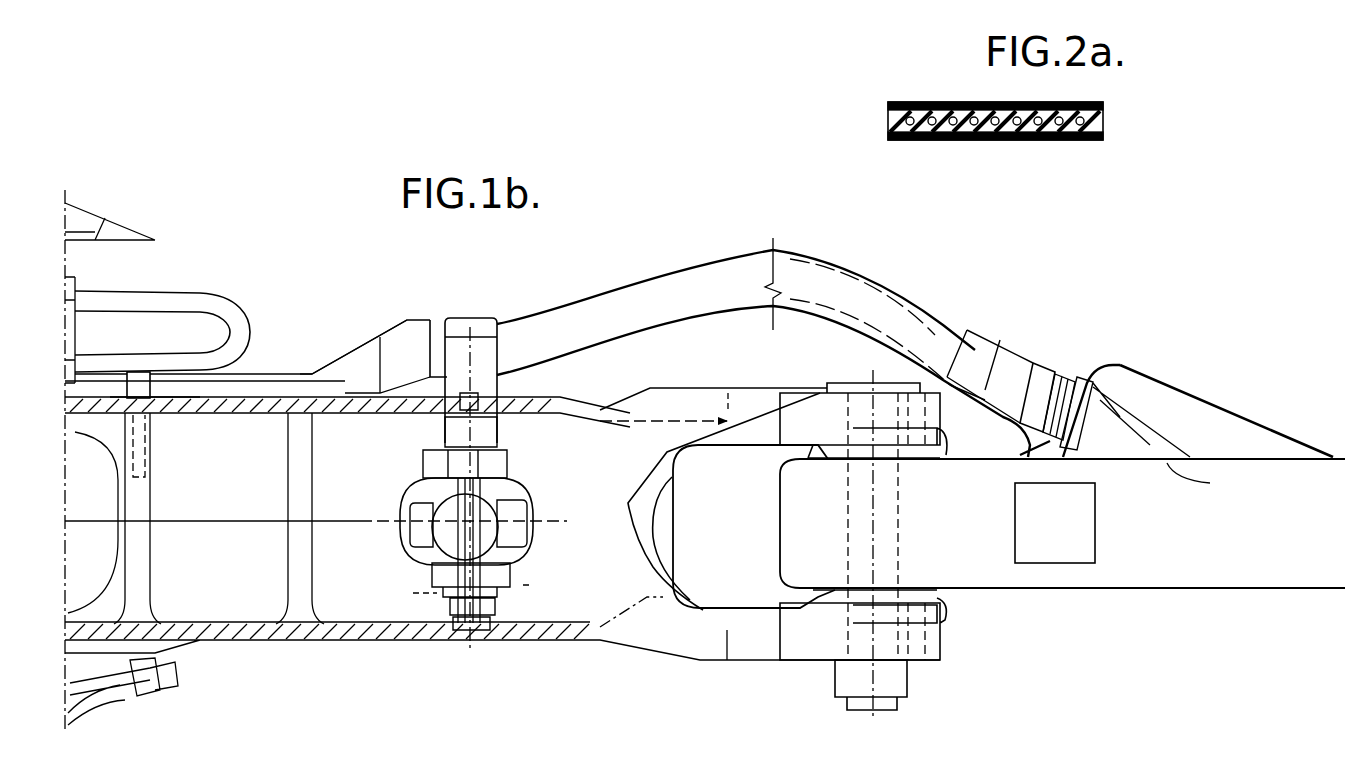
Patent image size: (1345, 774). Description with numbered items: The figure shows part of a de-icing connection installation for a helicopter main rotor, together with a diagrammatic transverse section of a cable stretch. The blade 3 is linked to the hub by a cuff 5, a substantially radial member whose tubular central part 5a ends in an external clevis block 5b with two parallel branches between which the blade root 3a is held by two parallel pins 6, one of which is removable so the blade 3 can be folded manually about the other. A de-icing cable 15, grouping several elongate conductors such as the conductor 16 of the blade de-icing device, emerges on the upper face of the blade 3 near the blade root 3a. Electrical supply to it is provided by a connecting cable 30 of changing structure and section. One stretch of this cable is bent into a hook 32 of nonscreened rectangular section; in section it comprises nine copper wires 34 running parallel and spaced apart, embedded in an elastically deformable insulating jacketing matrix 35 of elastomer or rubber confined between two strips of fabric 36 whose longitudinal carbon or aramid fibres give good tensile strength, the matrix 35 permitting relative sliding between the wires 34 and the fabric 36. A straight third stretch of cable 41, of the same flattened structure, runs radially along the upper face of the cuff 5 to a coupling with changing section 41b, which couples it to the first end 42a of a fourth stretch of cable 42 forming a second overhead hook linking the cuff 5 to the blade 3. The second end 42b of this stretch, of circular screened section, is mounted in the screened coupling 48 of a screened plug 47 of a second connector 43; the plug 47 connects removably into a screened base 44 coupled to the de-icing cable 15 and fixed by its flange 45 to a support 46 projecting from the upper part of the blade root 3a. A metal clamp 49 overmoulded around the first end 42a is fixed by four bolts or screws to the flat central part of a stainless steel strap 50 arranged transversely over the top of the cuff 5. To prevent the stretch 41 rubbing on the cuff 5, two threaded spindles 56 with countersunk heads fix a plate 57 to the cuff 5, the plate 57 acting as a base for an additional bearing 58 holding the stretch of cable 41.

In FIG. 1b, the blade 3 is at (1178, 552).
In FIG. 1b, the blade root 3a is at (800, 503).
In FIG. 1b, the cuff 5 is at (222, 642).
In FIG. 1b, the central part 5a is at (285, 640).
In FIG. 1b, the external clevis block 5b is at (792, 432).
In FIG. 1b, the pins 6 is at (863, 538).
In FIG. 1b, the de-icing cable 15 is at (1115, 423).
In FIG. 1b, the conductor 16 is at (1167, 463).
In FIG. 1b, the connecting cable 30 is at (335, 335).
In FIG. 1b, the hook 32 is at (210, 302).
In FIG. 2a, the copper wires 34 is at (940, 137).
In FIG. 2a, the jacketing matrix 35 is at (1052, 133).
In FIG. 2a, the strips of fabric 36 is at (905, 104).
In FIG. 1b, the third stretch of cable 41 is at (302, 387).
In FIG. 1b, the coupling with changing section 41b is at (363, 368).
In FIG. 1b, the fourth stretch of cable 42 is at (740, 283).
In FIG. 1b, the first end 42a is at (440, 343).
In FIG. 1b, the second end 42b is at (965, 338).
In FIG. 1b, the second connector 43 is at (1066, 370).
In FIG. 1b, the base 44 is at (1092, 400).
In FIG. 1b, the flange 45 is at (1085, 383).
In FIG. 1b, the support 46 is at (1230, 412).
In FIG. 1b, the plug 47 is at (1045, 362).
In FIG. 1b, the screened coupling 48 is at (997, 340).
In FIG. 1b, the metal clamp 49 is at (482, 330).
In FIG. 1b, the strap 50 is at (490, 388).
In FIG. 1b, the threaded spindles 56 is at (138, 445).
In FIG. 1b, the plate 57 is at (155, 397).
In FIG. 1b, the additional bearing 58 is at (145, 383).